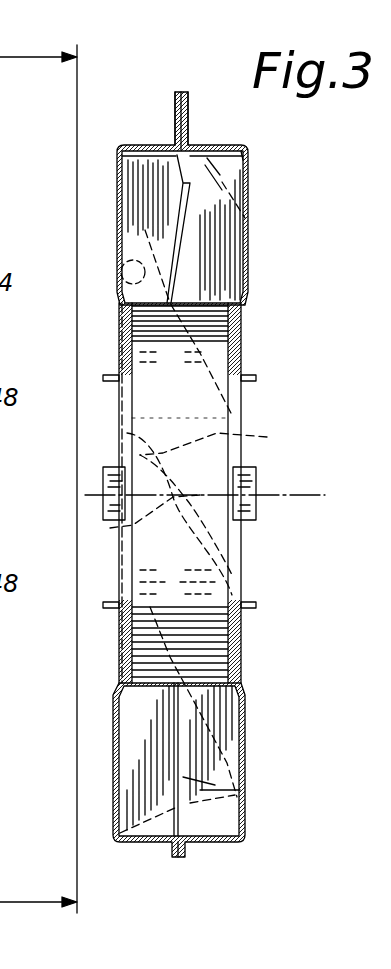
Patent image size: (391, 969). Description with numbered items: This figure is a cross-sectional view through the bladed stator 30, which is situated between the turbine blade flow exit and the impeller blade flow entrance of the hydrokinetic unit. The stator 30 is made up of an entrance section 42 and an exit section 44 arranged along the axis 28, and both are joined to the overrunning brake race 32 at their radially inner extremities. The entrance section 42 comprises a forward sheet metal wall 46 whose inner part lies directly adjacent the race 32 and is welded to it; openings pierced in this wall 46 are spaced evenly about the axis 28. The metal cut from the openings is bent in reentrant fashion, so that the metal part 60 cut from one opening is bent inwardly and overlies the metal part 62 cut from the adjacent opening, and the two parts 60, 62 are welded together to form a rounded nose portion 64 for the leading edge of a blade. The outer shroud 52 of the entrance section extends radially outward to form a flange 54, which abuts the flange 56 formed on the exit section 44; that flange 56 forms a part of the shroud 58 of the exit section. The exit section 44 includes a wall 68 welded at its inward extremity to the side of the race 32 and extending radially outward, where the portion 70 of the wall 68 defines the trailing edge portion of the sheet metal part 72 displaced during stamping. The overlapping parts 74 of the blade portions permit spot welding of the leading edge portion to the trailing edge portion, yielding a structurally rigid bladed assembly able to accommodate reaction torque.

The axis 28 is at (303, 495).
The bladed stator 30 is at (250, 206).
The race 32 is at (207, 418).
The entrance section 42 is at (147, 147).
The exit section 44 is at (209, 146).
The forward sheet metal wall 46 is at (118, 330).
The outer shroud 52 is at (188, 183).
The flange 54 is at (177, 100).
The flange 56 is at (188, 105).
The shroud 58 is at (250, 160).
The metal part 60 is at (180, 182).
The metal part 62 is at (162, 240).
The rounded nose portion 64 is at (127, 437).
The wall 68 is at (245, 322).
The portion of the wall 70 is at (250, 255).
The sheet metal part 72 is at (213, 227).
The overlapping parts 74 is at (200, 185).